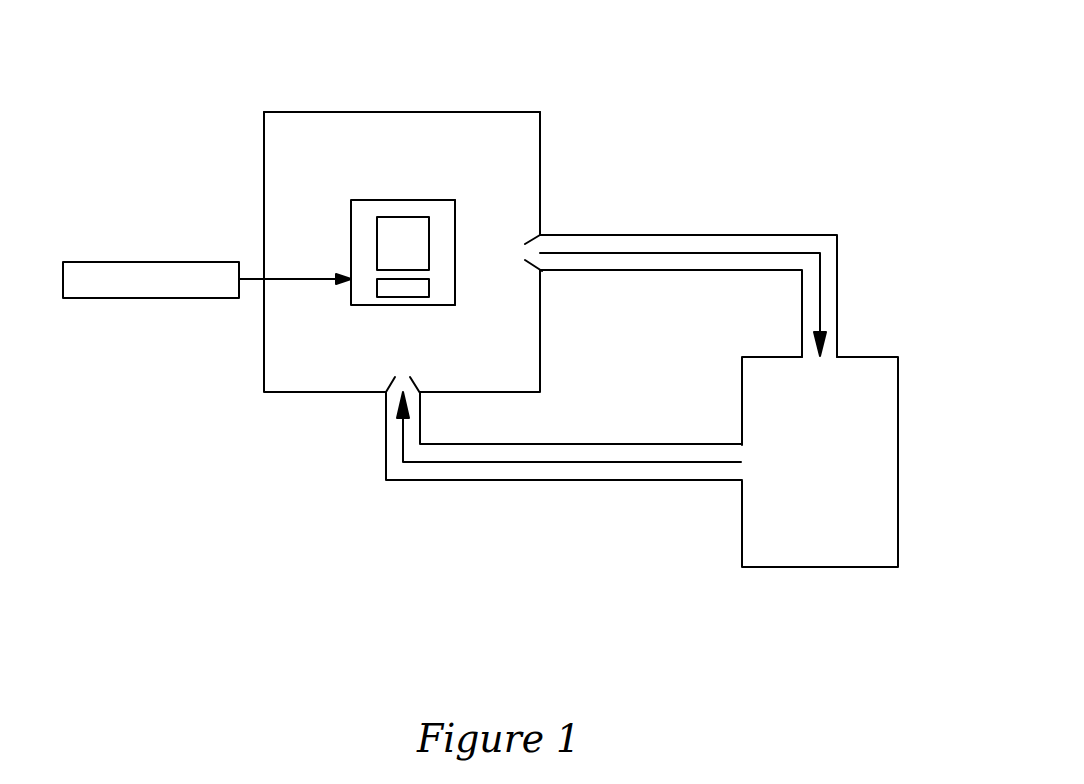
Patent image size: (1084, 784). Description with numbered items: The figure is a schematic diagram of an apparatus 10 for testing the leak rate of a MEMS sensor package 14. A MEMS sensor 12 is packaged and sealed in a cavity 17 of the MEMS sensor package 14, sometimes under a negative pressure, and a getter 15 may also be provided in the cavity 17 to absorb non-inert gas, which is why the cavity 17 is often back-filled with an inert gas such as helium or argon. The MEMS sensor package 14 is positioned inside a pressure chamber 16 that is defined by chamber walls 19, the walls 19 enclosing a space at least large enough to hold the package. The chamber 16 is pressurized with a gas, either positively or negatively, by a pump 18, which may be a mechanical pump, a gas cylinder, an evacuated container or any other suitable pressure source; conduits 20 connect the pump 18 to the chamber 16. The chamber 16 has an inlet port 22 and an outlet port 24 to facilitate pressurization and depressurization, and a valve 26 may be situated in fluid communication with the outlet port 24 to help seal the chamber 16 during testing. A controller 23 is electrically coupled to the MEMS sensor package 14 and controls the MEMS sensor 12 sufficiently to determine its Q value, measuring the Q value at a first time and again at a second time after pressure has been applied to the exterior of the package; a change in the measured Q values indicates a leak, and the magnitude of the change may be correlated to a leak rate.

The apparatus 10 is at (690, 68).
The MEMS sensor 12 is at (388, 228).
The MEMS sensor package 14 is at (351, 233).
The getter 15 is at (377, 287).
The pressure chamber 16 is at (405, 145).
The cavity 17 is at (440, 227).
The pump 18 is at (877, 442).
The chamber walls 19 is at (347, 113).
The inlet conduit 20 is at (547, 258).
The inlet port 22 is at (418, 393).
The controller 23 is at (155, 298).
The outlet port 24 is at (532, 238).
The valve 26 is at (392, 383).